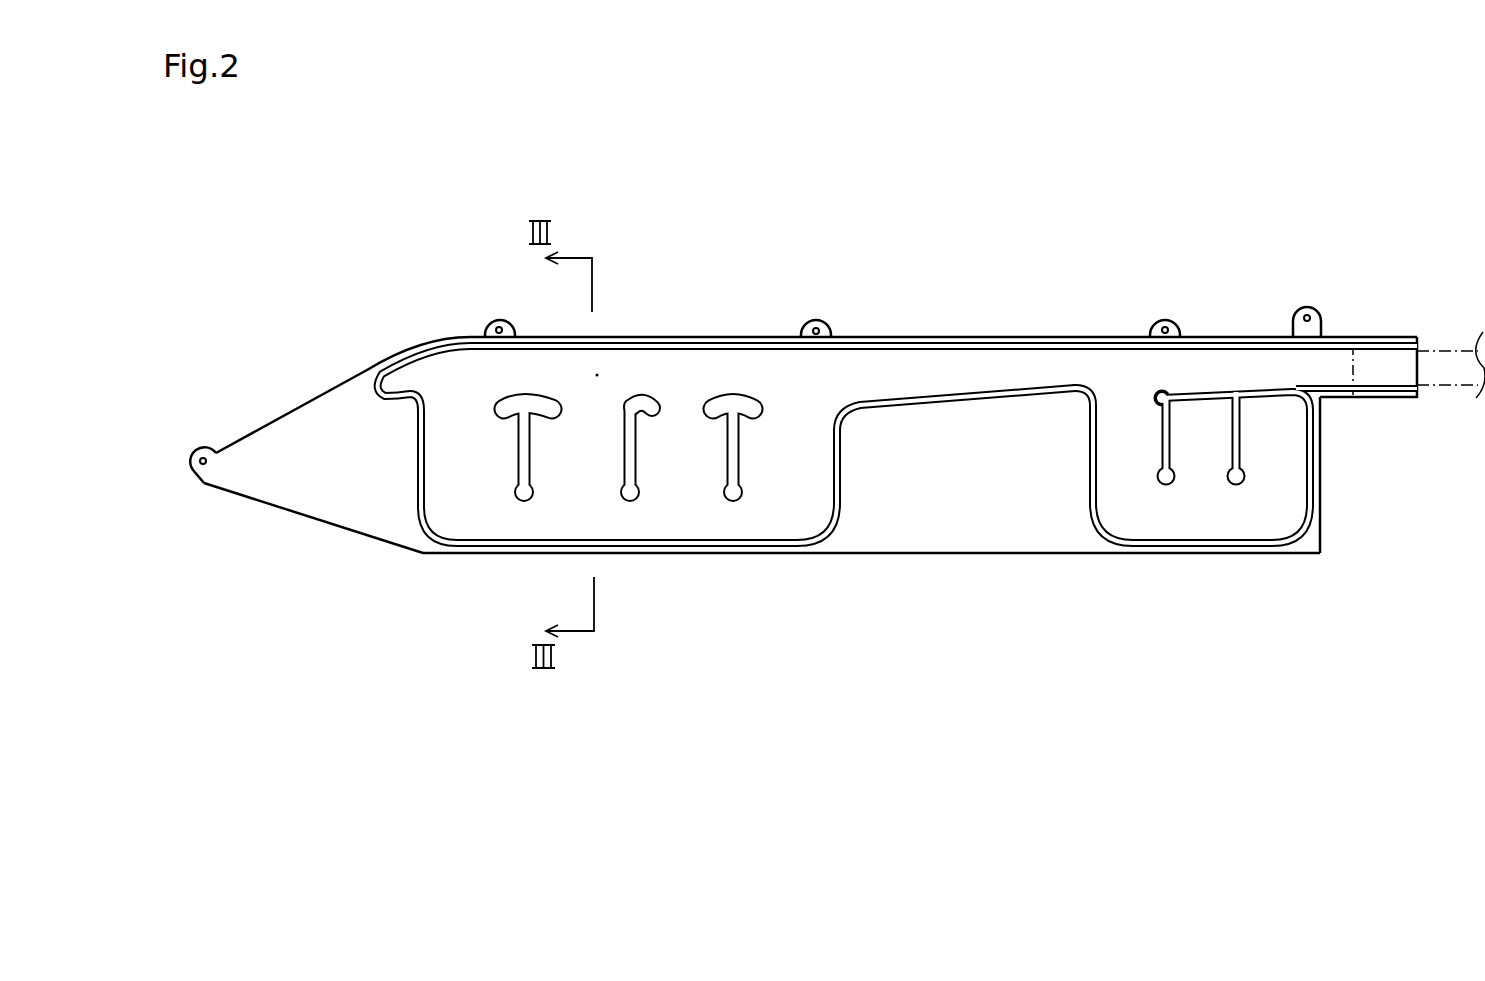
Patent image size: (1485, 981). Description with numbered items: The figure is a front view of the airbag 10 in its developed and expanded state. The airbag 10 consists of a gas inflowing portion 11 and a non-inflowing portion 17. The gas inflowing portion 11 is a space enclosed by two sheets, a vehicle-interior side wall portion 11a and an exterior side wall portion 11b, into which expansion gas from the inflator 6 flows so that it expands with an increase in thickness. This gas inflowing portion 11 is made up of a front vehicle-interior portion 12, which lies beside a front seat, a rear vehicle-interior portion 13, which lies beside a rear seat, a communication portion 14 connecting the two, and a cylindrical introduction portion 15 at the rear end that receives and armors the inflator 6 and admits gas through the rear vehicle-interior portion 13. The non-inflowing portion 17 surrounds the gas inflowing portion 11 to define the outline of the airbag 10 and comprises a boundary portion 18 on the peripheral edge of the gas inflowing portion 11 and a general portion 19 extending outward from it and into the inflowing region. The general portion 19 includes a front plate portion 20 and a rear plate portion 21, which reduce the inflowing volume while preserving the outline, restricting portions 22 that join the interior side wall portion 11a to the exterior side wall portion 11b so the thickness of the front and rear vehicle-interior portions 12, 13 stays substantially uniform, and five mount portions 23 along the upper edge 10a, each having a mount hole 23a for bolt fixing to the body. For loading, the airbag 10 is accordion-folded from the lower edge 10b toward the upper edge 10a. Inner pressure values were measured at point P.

The inflator 6 is at (1449, 365).
The airbag 10 is at (799, 449).
The upper edge 10a is at (903, 338).
The lower edge 10b is at (925, 553).
The gas inflowing portion 11 is at (736, 656).
The vehicle-interior side wall portion 11a is at (693, 530).
The exterior side wall portion 11b is at (772, 530).
The front vehicle-interior portion 12 is at (490, 528).
The rear vehicle-interior portion 13 is at (1209, 520).
The communication portion 14 is at (987, 367).
The introduction portion 15 is at (1384, 365).
The non-inflowing portion 17 is at (897, 457).
The boundary portion 18 is at (841, 507).
The general portion 19 is at (897, 457).
The front plate portion 20 is at (328, 505).
The rear plate portion 21 is at (1022, 530).
The restricting portion 22 is at (526, 434).
The mount portion 23 is at (207, 447).
The mount hole 23a is at (197, 473).
The point P is at (597, 375).